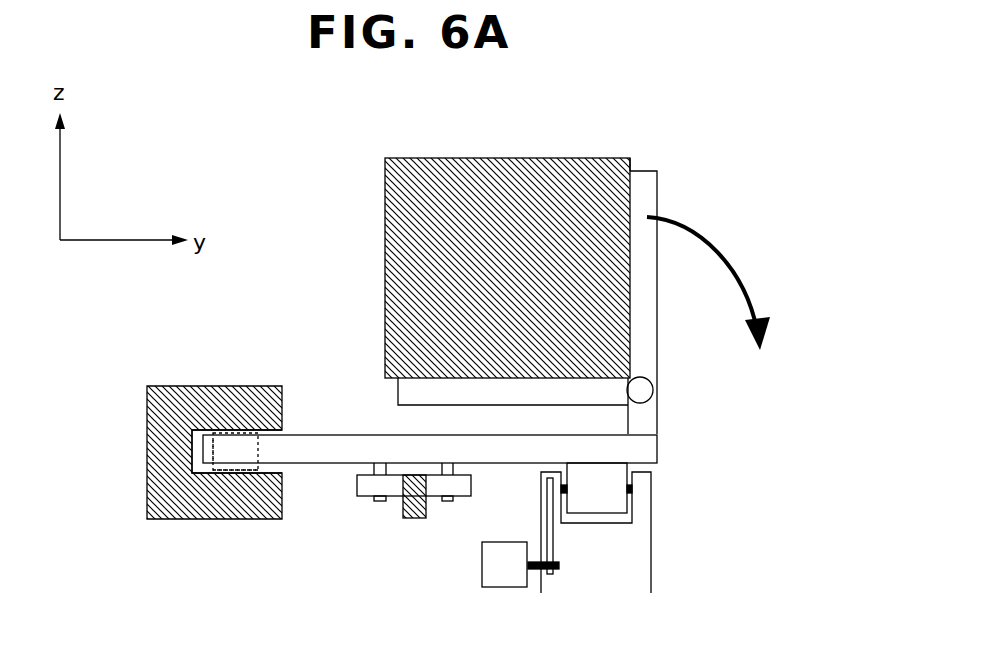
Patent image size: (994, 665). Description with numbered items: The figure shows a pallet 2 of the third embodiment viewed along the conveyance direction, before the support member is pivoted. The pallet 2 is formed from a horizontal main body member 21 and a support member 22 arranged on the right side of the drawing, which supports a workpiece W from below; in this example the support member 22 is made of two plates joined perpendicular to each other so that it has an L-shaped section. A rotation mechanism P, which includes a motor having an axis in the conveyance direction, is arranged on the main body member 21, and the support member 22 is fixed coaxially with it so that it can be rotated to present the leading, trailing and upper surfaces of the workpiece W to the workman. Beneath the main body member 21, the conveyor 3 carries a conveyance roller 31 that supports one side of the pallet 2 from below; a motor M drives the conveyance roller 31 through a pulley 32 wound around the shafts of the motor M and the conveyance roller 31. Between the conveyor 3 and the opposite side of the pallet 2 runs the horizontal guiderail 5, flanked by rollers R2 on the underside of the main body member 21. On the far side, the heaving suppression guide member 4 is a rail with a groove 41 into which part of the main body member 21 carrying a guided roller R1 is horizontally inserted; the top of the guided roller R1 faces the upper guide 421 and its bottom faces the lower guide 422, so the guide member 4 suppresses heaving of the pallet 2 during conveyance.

The workpiece W is at (516, 158).
The support member 22 is at (660, 330).
The rotation mechanism P is at (645, 390).
The pallet 2 is at (680, 424).
The main body member 21 is at (372, 434).
The heaving suppression guide member 4 is at (174, 372).
The upper guide 421 is at (244, 437).
The lower guide 422 is at (213, 470).
The guided roller R1 is at (263, 452).
The groove 41 is at (278, 467).
The rollers R2 is at (357, 497).
The horizontal guiderail 5 is at (412, 518).
The conveyor 3 is at (664, 543).
The conveyance roller 31 is at (596, 513).
The pulley 32 is at (550, 574).
The motor M is at (505, 587).